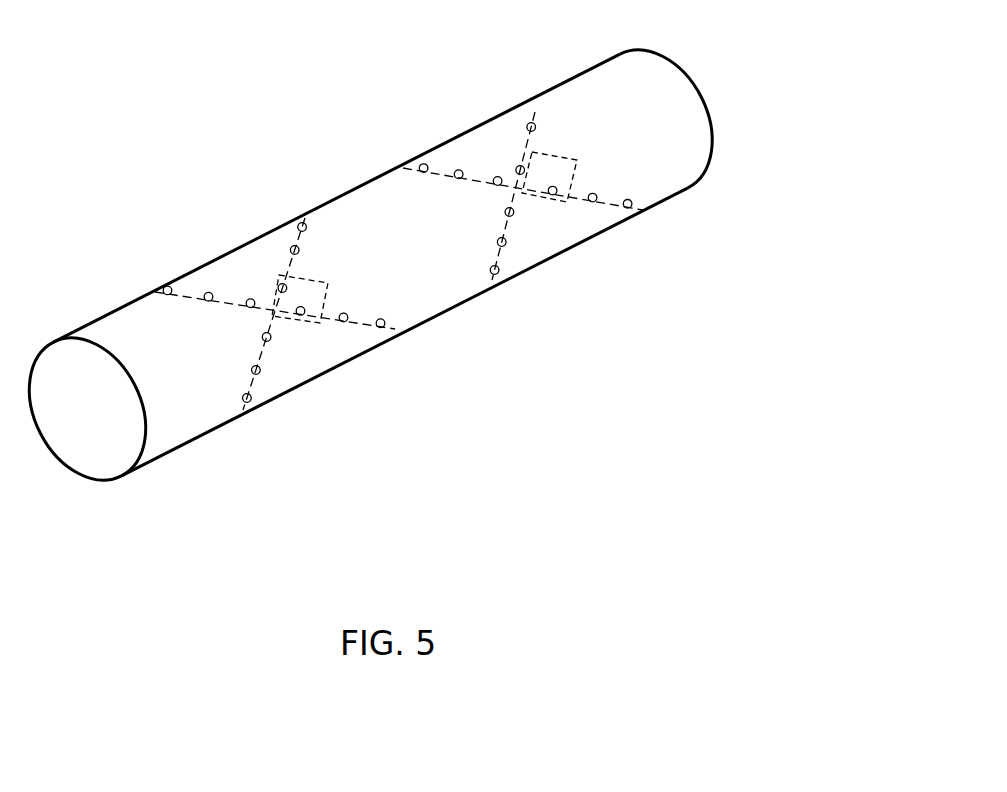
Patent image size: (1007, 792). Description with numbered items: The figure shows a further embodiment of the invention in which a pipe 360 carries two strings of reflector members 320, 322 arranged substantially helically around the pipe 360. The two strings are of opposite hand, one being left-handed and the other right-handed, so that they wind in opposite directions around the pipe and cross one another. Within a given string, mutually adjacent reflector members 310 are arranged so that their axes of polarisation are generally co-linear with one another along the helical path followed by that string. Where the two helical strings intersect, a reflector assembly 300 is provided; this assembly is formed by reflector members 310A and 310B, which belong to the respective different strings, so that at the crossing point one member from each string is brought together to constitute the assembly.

The reflector assembly 300 is at (560, 153).
The reflector members 310 is at (260, 370).
The reflector member 310A is at (310, 326).
The reflector member 310B is at (283, 274).
The string of reflector members 320 is at (250, 393).
The string of reflector members 322 is at (205, 293).
The pipe 360 is at (663, 173).